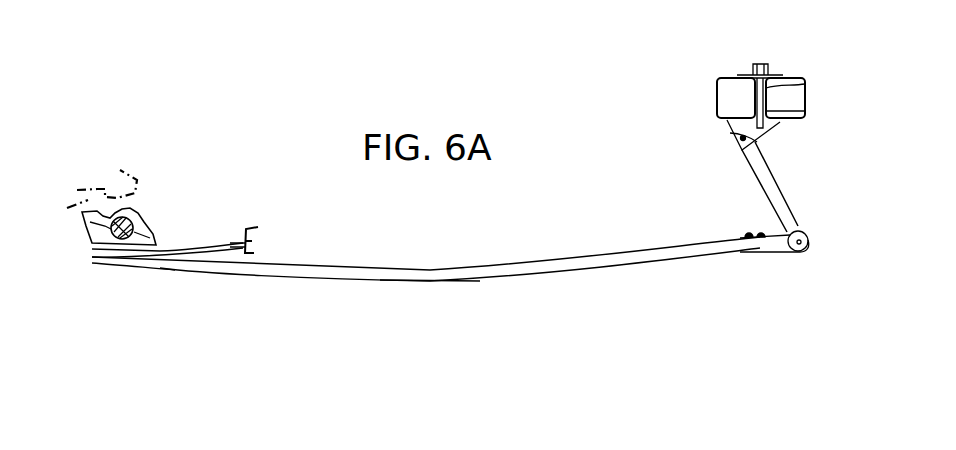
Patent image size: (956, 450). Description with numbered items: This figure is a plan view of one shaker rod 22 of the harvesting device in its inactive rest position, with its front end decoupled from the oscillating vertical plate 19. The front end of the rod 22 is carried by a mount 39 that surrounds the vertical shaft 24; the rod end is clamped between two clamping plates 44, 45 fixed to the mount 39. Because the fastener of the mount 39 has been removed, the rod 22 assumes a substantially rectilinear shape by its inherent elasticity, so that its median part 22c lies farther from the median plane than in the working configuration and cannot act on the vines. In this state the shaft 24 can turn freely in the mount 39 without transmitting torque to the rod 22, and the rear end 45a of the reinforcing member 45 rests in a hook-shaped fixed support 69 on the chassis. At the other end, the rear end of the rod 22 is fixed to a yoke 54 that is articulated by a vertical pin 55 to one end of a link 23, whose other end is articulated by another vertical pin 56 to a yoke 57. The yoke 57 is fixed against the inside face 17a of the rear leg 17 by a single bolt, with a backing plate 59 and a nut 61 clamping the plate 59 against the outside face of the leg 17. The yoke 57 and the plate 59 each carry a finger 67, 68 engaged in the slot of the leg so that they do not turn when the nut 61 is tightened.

The rear leg 17 is at (716, 102).
The inside face of the rear leg 17a is at (794, 118).
The oscillating vertical plate 19 is at (120, 170).
The rod 22 is at (473, 263).
The median part of the rod 22c is at (427, 282).
The link 23 is at (776, 186).
The vertical shaft 24 is at (132, 218).
The mount 39 is at (160, 225).
The clamping plate 44 is at (118, 267).
The clamping plate 45 is at (157, 253).
The rear end of the reinforcing member 45a is at (256, 243).
The yoke 54 is at (785, 253).
The vertical pin 55 is at (803, 235).
The vertical pin 56 is at (743, 140).
The yoke 57 is at (733, 131).
The backing plate 59 is at (742, 77).
The nut 61 is at (759, 63).
The finger 67 is at (806, 110).
The finger 68 is at (788, 86).
The fixed support 69 is at (257, 247).